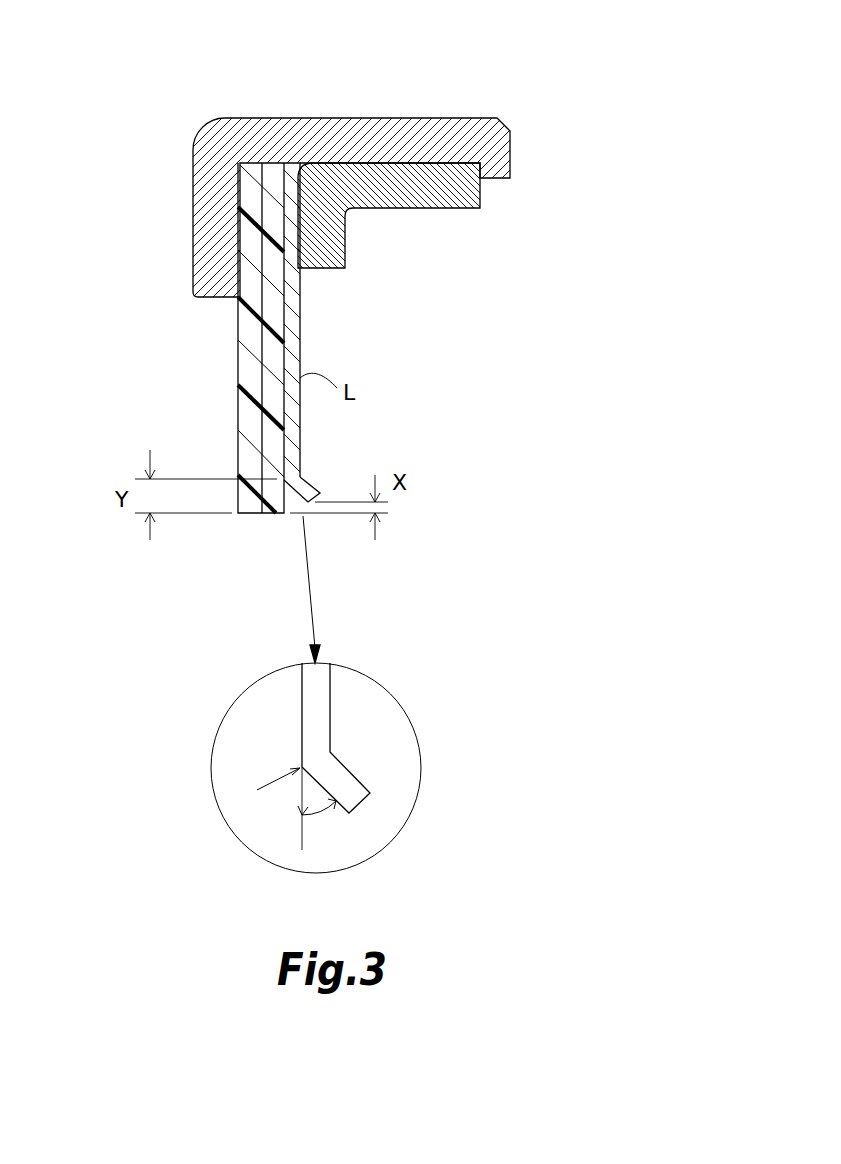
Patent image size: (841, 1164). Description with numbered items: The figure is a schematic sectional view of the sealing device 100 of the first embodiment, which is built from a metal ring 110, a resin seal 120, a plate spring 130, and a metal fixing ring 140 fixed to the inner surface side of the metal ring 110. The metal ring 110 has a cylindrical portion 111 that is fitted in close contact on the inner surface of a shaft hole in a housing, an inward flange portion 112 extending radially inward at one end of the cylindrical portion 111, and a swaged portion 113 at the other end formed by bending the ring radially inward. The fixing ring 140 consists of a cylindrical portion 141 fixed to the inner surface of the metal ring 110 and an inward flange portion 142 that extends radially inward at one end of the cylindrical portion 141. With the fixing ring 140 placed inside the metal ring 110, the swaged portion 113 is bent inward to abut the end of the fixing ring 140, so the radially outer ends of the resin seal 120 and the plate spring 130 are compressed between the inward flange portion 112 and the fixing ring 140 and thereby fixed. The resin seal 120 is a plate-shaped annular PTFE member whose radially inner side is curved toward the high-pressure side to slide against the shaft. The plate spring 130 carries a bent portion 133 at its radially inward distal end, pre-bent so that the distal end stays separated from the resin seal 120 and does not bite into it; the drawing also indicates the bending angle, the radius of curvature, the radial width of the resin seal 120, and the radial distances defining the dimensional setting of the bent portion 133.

The sealing device 100 is at (580, 105).
The metal ring 110 is at (290, 97).
The cylindrical portion 111 is at (388, 150).
The inward flange portion 112 is at (217, 200).
The swaged portion 113 is at (503, 167).
The resin seal 120 is at (253, 347).
The plate spring 130 is at (324, 326).
The bent portion 133 is at (312, 480).
The fixing ring 140 is at (406, 233).
The cylindrical portion 141 is at (465, 210).
The inward flange portion 142 is at (322, 248).